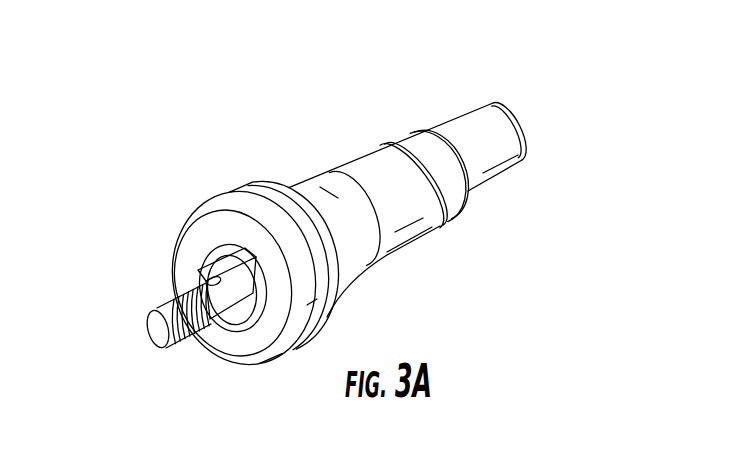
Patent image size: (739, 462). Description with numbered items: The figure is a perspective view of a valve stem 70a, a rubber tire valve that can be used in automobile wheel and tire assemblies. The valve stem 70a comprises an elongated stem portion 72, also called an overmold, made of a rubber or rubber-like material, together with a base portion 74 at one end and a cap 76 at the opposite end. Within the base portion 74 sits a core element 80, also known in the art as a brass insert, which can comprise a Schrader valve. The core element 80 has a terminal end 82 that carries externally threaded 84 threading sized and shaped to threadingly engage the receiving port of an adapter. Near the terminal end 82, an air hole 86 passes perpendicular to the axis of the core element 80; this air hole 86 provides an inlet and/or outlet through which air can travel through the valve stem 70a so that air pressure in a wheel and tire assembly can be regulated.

The valve stem 70a is at (203, 144).
The stem portion 72 is at (357, 165).
The base portion 74 is at (299, 347).
The cap 76 is at (473, 113).
The core element 80 is at (215, 328).
The terminal end 82 is at (160, 330).
The external threading 84 is at (160, 302).
The air hole 86 is at (208, 281).